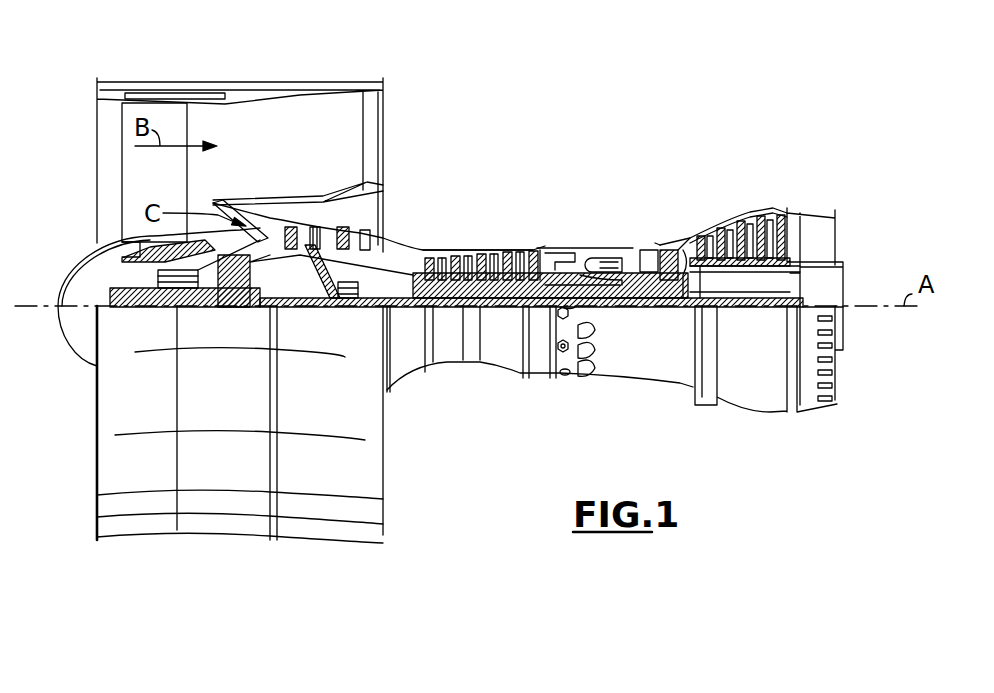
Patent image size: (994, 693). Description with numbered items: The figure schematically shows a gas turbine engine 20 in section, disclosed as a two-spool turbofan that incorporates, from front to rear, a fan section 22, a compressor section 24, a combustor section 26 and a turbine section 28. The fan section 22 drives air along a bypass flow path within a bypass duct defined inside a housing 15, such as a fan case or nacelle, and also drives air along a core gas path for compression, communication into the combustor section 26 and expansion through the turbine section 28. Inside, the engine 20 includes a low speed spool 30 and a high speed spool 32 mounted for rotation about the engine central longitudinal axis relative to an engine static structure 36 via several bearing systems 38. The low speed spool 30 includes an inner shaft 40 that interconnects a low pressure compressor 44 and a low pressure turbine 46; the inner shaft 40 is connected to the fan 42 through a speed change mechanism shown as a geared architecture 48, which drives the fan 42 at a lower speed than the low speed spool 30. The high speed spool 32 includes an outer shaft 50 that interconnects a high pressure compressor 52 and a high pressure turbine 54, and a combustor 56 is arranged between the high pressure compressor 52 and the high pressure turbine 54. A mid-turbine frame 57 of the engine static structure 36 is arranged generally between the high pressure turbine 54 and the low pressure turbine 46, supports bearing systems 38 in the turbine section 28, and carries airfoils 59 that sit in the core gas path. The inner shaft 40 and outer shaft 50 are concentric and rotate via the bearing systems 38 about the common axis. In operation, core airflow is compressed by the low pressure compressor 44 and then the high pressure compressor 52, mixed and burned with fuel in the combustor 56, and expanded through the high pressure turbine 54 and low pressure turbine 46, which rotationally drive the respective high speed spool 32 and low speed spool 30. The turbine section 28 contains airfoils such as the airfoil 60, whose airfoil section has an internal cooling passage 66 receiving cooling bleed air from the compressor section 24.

The housing 15 is at (242, 88).
The gas turbine engine 20 is at (611, 113).
The fan section 22 is at (183, 72).
The compressor section 24 is at (426, 221).
The combustor section 26 is at (593, 231).
The turbine section 28 is at (751, 222).
The low speed spool 30 is at (505, 322).
The high speed spool 32 is at (538, 250).
The engine static structure 36 is at (537, 390).
The bearing systems 38 is at (349, 310).
The inner shaft 40 is at (398, 373).
The fan 42 is at (169, 189).
The low pressure compressor 44 is at (383, 187).
The low pressure turbine 46 is at (747, 210).
The geared architecture 48 is at (247, 310).
The outer shaft 50 is at (604, 308).
The high pressure compressor 52 is at (490, 253).
The high pressure turbine 54 is at (645, 243).
The combustor 56 is at (600, 258).
The mid-turbine frame 57 is at (687, 223).
The airfoils 59 is at (703, 279).
The airfoil 60 is at (685, 232).
The internal cooling passage 66 is at (395, 688).